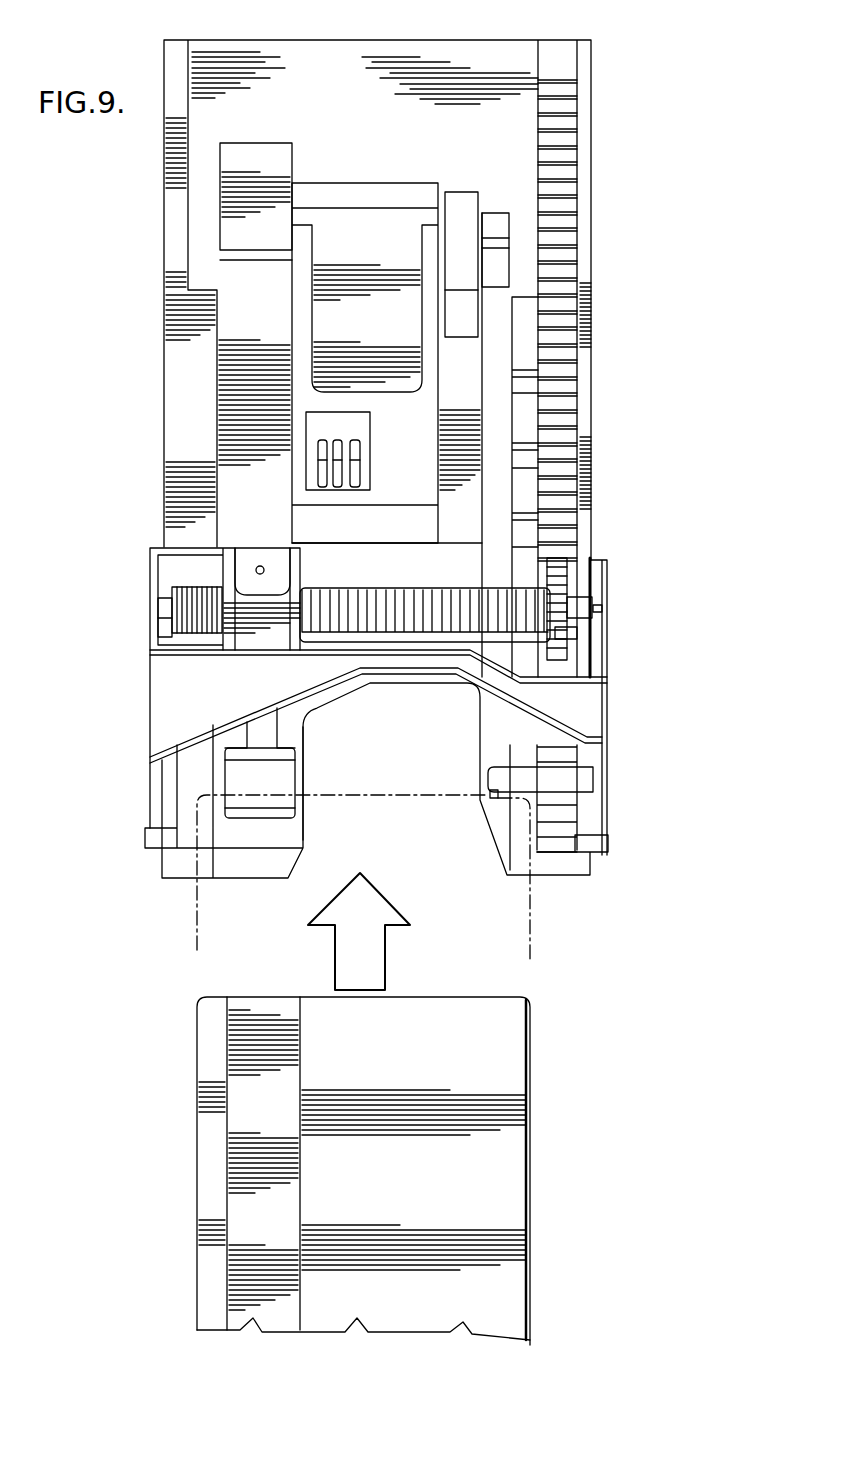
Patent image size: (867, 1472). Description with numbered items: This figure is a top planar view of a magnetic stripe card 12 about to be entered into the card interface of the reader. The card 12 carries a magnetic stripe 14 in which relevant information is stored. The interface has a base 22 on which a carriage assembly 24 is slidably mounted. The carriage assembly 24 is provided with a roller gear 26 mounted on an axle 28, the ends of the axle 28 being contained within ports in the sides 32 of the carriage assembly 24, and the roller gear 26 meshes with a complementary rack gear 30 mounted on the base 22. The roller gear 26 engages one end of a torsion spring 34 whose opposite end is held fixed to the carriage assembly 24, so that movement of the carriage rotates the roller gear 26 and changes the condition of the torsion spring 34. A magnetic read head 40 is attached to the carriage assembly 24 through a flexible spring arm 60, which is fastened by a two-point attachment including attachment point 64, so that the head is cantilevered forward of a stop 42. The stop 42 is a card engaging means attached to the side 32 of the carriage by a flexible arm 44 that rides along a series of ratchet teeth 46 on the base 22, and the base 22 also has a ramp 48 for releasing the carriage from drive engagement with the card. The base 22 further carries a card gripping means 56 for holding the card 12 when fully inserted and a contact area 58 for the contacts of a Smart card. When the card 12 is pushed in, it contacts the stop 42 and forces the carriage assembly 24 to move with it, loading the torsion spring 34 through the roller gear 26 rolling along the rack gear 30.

The magnetic stripe card 12 is at (520, 1103).
The magnetic stripe 14 is at (250, 1077).
The base 22 is at (392, 75).
The carriage assembly 24 is at (591, 703).
The roller gear 26 is at (563, 578).
The axle 28 is at (583, 608).
The rack gear 30 is at (565, 252).
The sides 32 is at (602, 765).
The torsion spring 34 is at (567, 640).
The magnetic read head 40 is at (235, 778).
The stop 42 is at (500, 797).
The flexible arm 44 is at (572, 777).
The ratchet teeth 46 is at (528, 415).
The ramp 48 is at (512, 222).
The card gripping means 56 is at (460, 210).
The contact area 58 is at (345, 215).
The flexible spring arm 60 is at (262, 733).
The attachment point 64 is at (260, 565).